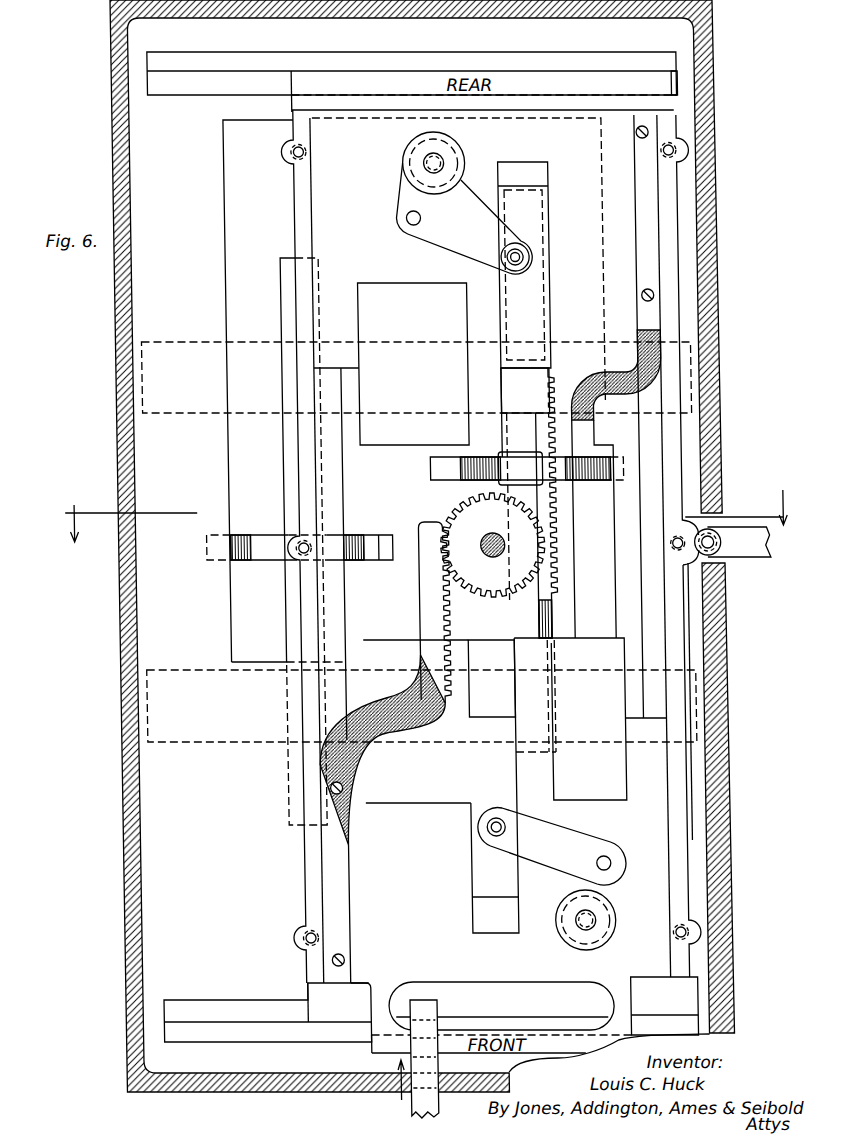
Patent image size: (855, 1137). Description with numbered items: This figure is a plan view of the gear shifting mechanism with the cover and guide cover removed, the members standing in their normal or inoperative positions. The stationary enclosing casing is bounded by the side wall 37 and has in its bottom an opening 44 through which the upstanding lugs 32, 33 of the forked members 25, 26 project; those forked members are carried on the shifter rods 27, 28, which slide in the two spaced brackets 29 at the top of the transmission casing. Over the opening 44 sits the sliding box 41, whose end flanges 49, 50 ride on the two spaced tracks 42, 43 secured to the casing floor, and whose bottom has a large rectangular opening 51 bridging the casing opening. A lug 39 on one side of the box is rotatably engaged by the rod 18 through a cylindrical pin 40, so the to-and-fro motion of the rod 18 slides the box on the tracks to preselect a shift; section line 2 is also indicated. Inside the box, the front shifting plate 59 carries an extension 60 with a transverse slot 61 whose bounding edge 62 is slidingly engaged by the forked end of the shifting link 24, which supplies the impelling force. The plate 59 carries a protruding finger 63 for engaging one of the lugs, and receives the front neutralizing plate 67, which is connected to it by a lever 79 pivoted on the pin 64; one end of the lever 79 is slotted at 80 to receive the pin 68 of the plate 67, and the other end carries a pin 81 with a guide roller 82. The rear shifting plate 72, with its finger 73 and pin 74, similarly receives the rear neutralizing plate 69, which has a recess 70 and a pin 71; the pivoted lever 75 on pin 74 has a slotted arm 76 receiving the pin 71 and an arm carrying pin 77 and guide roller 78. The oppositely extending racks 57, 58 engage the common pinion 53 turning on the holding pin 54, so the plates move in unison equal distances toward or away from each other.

The side wall 37 is at (117, 135).
The track 42 is at (176, 86).
The end flange 49 is at (302, 97).
The opening 44 is at (262, 391).
The shifter rod 28 is at (284, 590).
The sliding box 41 is at (303, 188).
The rectangular opening 51 is at (385, 675).
The rack 58 is at (323, 852).
The forked member 26 is at (244, 545).
The upstanding lug 33 is at (374, 532).
The bracket 29 is at (250, 352).
The rear neutralizing plate 69 is at (414, 364).
The protruding finger 73 is at (489, 410).
The rear shifting plate 72 is at (542, 262).
The pin 68 is at (511, 650).
The shifter rod 27 is at (528, 604).
The upstanding lug 32 is at (430, 465).
The rack 57 is at (642, 303).
The forked member 25 is at (578, 473).
The pinion 53 is at (492, 545).
The holding pin 54 is at (476, 542).
The upstanding pin 77 is at (440, 157).
The guide roller 78 is at (455, 170).
The pivoted lever 75 is at (445, 246).
The upstanding pin 74 is at (403, 222).
The upstanding pin 71 is at (518, 248).
The slot 76 is at (527, 260).
The recess 70 is at (491, 678).
The protruding finger 63 is at (570, 719).
The front neutralizing plate 67 is at (417, 721).
The front shifting plate 59 is at (390, 906).
The lever 79 is at (550, 828).
The slot 80 is at (481, 810).
The upwardly projecting pin 64 is at (596, 848).
The upstanding pin 81 is at (584, 916).
The guide roller 82 is at (585, 888).
The slot 61 is at (558, 949).
The extension 60 is at (607, 980).
The edge 62 is at (355, 1034).
The track 43 is at (189, 995).
The end flange 50 is at (301, 988).
The shifting link 24 is at (380, 1092).
The cylindrical pin 40 is at (712, 500).
The lug 39 is at (692, 578).
The rod 18 is at (749, 552).
The section line 2- 2 is at (427, 531).